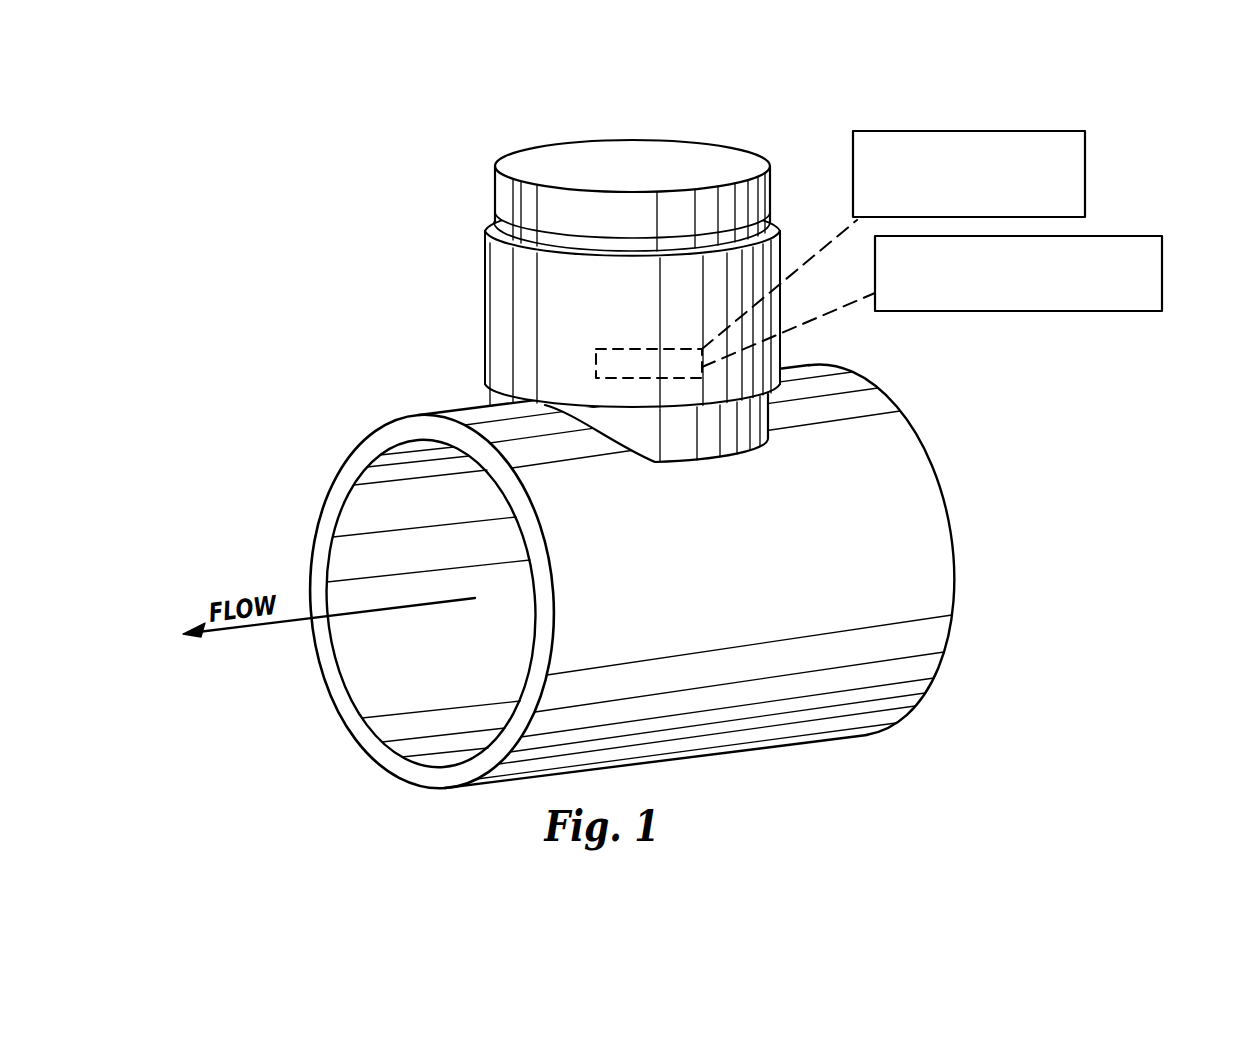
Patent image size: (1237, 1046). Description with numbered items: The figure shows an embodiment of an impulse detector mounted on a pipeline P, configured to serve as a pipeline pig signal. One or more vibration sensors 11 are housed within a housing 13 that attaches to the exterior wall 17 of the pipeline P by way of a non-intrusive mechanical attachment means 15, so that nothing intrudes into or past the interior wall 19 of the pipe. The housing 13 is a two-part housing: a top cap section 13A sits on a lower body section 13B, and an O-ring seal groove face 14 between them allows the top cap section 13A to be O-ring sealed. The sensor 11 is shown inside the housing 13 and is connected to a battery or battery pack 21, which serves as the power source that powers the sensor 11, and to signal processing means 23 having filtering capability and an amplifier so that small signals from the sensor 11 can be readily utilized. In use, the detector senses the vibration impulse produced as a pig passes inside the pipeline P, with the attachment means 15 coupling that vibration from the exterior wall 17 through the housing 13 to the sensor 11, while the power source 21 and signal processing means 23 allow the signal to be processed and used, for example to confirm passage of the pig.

The vibration sensor 11 is at (708, 366).
The housing 13 is at (497, 272).
The top cap section 13A is at (575, 158).
The lower body section 13B is at (483, 342).
The O-ring seal groove face 14 is at (773, 223).
The non-intrusive mechanical attachment means 15 is at (693, 463).
The exterior wall 17 is at (857, 702).
The interior wall 19 is at (385, 493).
The battery or battery pack 21 is at (1075, 130).
The signal processing means 23 is at (1148, 235).
The pipeline P is at (945, 460).